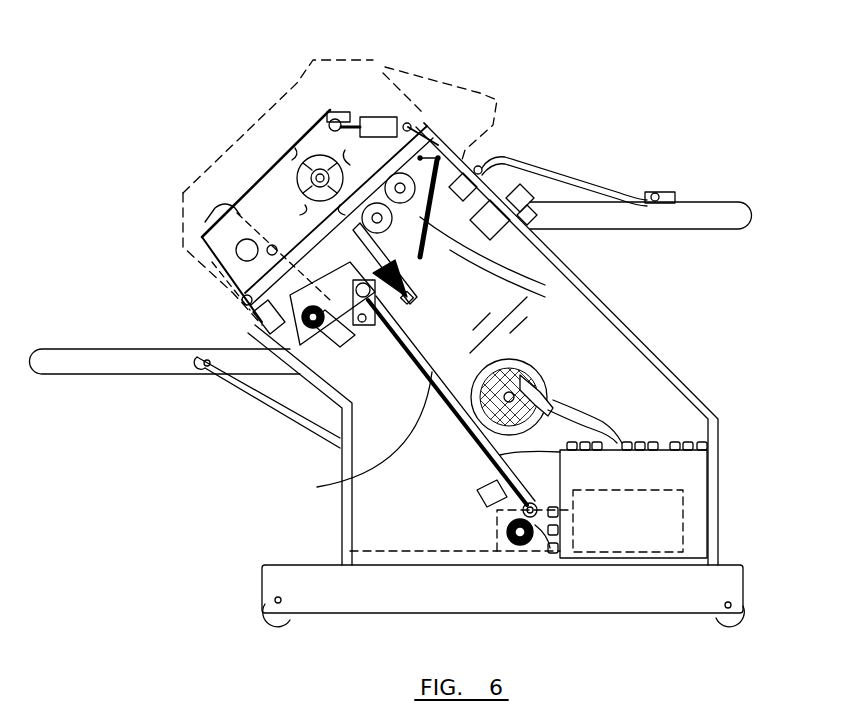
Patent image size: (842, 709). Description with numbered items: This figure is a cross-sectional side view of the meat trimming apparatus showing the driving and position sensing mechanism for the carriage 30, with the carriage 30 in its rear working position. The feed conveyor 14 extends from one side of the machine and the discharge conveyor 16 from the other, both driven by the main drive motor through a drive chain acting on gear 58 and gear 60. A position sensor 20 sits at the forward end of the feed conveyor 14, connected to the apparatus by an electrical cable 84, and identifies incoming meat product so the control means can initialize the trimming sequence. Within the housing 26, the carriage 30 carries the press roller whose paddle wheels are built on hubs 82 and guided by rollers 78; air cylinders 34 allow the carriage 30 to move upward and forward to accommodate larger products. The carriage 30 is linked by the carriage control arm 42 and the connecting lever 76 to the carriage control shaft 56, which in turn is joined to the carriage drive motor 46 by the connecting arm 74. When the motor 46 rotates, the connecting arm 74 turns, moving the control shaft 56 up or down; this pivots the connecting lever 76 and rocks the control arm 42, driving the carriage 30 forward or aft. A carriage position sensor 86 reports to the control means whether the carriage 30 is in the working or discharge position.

The feed conveyor 14 is at (703, 233).
The discharge conveyor 16 is at (95, 377).
The position sensor 20 is at (657, 193).
The housing 26 is at (667, 363).
The carriage 30 is at (263, 193).
The air cylinders 34 is at (368, 103).
The carriage control arm 42 is at (207, 210).
The carriage drive motor 46 is at (487, 550).
The carriage control shaft 56 is at (354, 437).
The gear 58 is at (400, 240).
The gear 60 is at (415, 145).
The connecting arm 74 is at (527, 540).
The connecting lever 76 is at (300, 348).
The guide rollers 78 is at (395, 213).
The hubs 82 is at (320, 175).
The pneumatic tube 84 is at (548, 168).
The carriage position sensor 86 is at (473, 502).